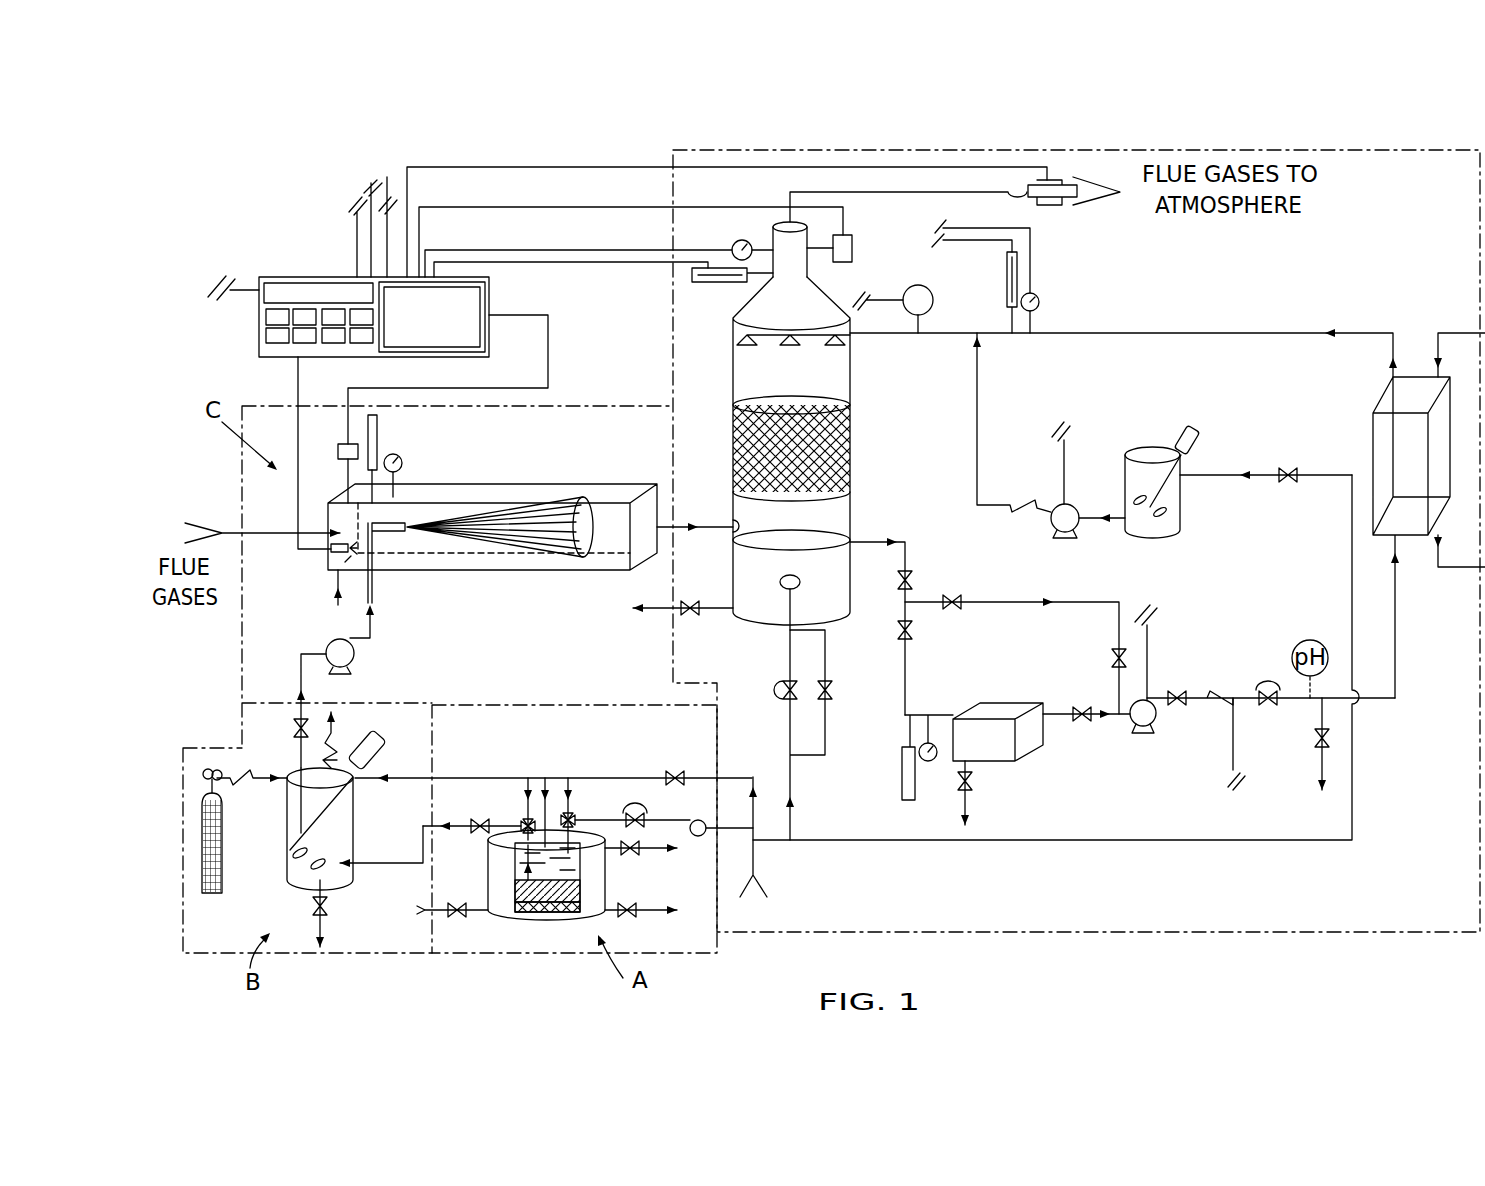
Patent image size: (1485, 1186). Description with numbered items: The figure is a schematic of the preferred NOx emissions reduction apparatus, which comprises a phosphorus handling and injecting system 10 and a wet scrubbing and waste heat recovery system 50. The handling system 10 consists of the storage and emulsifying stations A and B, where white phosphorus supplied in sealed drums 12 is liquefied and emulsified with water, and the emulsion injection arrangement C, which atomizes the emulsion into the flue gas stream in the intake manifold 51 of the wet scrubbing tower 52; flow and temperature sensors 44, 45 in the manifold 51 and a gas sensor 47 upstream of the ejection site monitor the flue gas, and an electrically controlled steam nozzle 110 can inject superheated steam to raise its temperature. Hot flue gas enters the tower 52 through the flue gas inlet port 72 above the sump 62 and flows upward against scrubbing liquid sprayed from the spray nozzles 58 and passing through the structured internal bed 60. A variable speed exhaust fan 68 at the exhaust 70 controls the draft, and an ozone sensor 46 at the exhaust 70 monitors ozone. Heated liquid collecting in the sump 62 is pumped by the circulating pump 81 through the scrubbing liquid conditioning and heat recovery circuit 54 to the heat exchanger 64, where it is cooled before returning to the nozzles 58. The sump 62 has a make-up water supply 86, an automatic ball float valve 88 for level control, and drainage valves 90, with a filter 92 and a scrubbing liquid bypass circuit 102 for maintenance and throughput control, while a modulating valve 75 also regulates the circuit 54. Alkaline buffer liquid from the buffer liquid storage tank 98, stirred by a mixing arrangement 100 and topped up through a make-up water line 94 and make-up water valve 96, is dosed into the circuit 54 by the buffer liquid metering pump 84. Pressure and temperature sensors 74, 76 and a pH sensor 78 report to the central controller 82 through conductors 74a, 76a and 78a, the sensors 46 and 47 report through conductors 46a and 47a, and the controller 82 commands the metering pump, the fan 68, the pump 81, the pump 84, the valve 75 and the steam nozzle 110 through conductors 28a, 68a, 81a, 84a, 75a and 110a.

The phosphorus handling and injecting system 10 is at (517, 955).
The sealed drums 12 is at (513, 897).
The conductor 28a is at (242, 291).
The flow sensor 44 is at (402, 463).
The temperature sensor 45 is at (380, 441).
The ozone sensor 46 is at (853, 238).
The electrical conductor 46a is at (573, 194).
The gas sensor 47 is at (338, 452).
The electrical conductor 47a is at (547, 353).
The wet scrubbing and waste heat recovery system 50 is at (798, 150).
The intake manifold 51 is at (512, 487).
The wet scrubbing tower 52 is at (852, 519).
The scrubbing liquid conditioning and heat recovery circuit 54 is at (1190, 333).
The spray nozzles 58 is at (790, 347).
The structured internal bed 60 is at (850, 453).
The sump 62 is at (840, 596).
The heat exchanger 64 is at (1378, 432).
The variable speed exhaust fan 68 is at (1053, 190).
The conductor 68a is at (514, 170).
The exhaust 70 is at (784, 227).
The flue gas inlet port 72 is at (733, 523).
The pressure sensor 74 is at (736, 241).
The conductor 74a is at (476, 244).
The modulating valve 75 is at (1266, 688).
The conductor 75a is at (357, 245).
The temperature sensor 76 is at (720, 283).
The conductor 76a is at (563, 257).
The pH sensor 78 is at (932, 293).
The conductor 78a is at (887, 281).
The circulating pump 81 is at (1152, 722).
The conductor 81a is at (371, 233).
The central controller 82 is at (268, 277).
The buffer liquid metering pump 84 is at (1050, 520).
The conductor 84a is at (357, 202).
The make-up water supply 86 is at (774, 690).
The automatic ball float valve 88 is at (913, 583).
The drainage valves 90 is at (978, 787).
The filter 92 is at (1030, 737).
The make-up water line 94 is at (1352, 586).
The make-up water valve 96 is at (1290, 468).
The buffer liquid storage tank 98 is at (1180, 513).
The mixing arrangement 100 is at (1167, 480).
The scrubbing liquid bypass circuit 102 is at (1082, 602).
The steam nozzle 110 is at (328, 558).
The conductor 110a is at (299, 372).